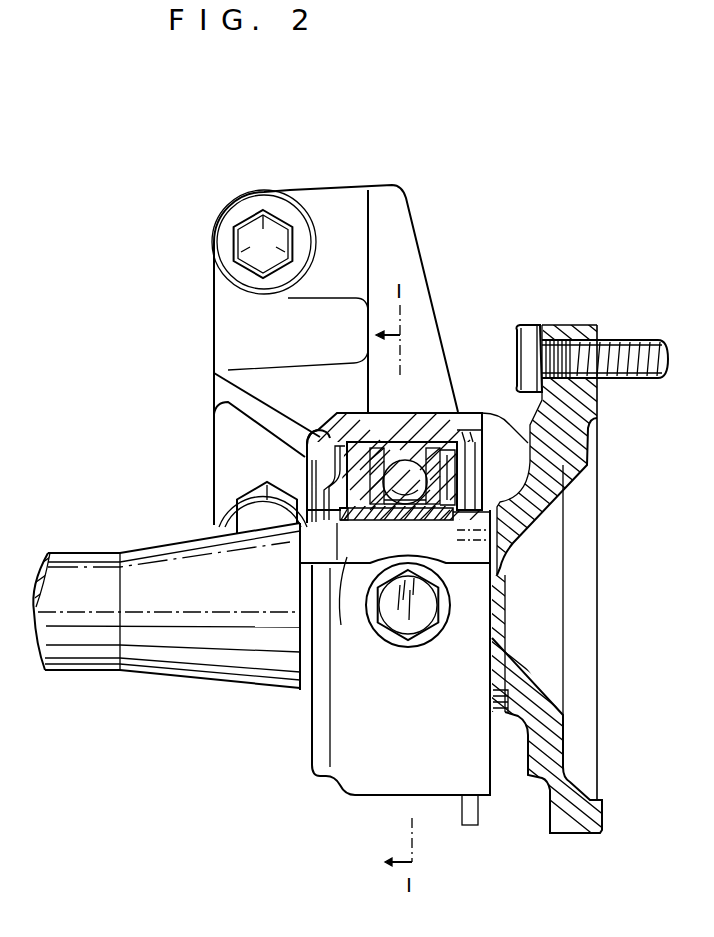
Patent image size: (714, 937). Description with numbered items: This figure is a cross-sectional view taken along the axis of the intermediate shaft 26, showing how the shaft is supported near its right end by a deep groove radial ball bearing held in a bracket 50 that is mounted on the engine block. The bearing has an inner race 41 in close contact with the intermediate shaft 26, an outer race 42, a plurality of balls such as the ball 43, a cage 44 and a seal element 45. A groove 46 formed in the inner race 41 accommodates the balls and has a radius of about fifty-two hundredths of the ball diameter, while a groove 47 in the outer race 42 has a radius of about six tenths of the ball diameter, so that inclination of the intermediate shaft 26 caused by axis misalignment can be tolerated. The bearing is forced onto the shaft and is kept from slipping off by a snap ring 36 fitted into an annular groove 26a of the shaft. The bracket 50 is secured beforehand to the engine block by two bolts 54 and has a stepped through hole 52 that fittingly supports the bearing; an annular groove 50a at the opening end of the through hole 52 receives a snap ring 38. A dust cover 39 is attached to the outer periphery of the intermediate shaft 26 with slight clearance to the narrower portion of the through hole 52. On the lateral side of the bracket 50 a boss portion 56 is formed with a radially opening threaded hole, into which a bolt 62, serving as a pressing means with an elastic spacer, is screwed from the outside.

The intermediate shaft 26 is at (155, 668).
The annular groove 26a is at (356, 607).
The snap ring 36 is at (325, 503).
The snap ring 38 is at (465, 443).
The dust cover 39 is at (318, 452).
The inner race 41 is at (400, 529).
The outer race 42 is at (425, 445).
The ball 43 is at (404, 503).
The cage 44 is at (380, 466).
The seal element 45 is at (445, 484).
The groove 46 is at (442, 548).
The groove 47 is at (403, 461).
The bracket 50 is at (330, 183).
The annular groove 50a is at (506, 423).
The through hole 52 is at (465, 412).
The bolts 54 is at (242, 242).
The boss portion 56 is at (445, 618).
The bolt 62 is at (405, 632).